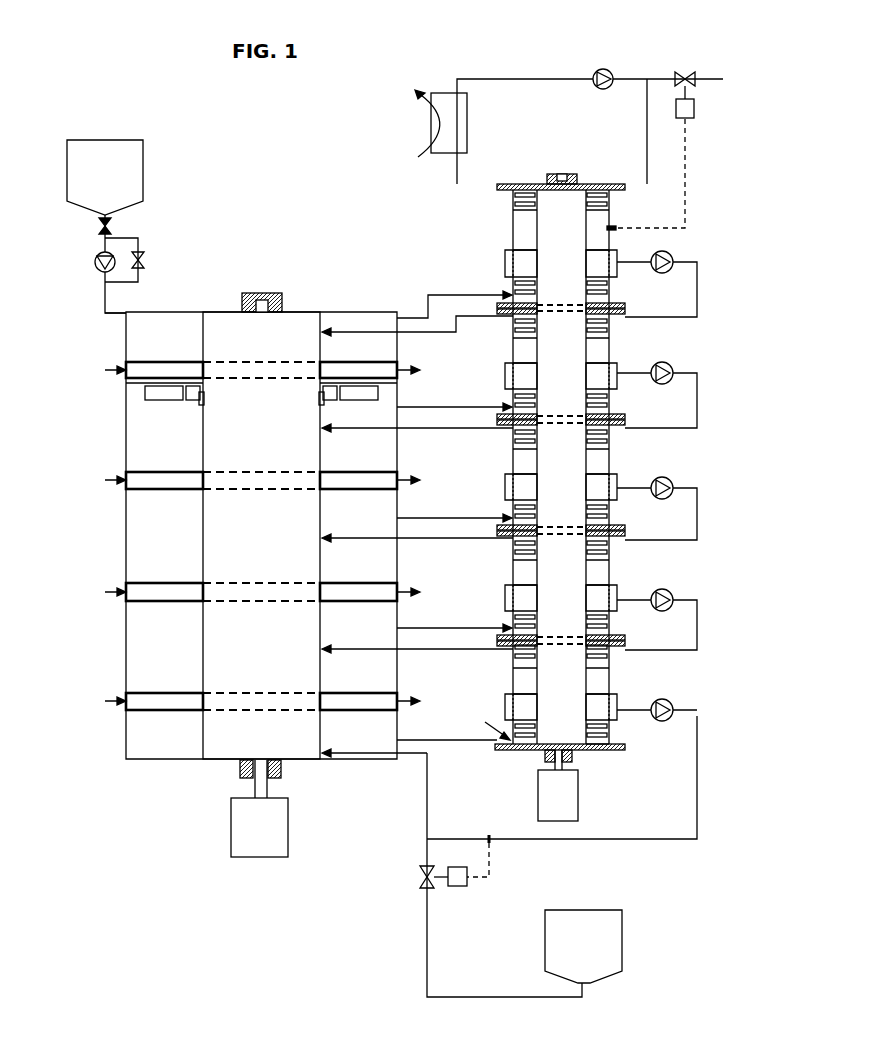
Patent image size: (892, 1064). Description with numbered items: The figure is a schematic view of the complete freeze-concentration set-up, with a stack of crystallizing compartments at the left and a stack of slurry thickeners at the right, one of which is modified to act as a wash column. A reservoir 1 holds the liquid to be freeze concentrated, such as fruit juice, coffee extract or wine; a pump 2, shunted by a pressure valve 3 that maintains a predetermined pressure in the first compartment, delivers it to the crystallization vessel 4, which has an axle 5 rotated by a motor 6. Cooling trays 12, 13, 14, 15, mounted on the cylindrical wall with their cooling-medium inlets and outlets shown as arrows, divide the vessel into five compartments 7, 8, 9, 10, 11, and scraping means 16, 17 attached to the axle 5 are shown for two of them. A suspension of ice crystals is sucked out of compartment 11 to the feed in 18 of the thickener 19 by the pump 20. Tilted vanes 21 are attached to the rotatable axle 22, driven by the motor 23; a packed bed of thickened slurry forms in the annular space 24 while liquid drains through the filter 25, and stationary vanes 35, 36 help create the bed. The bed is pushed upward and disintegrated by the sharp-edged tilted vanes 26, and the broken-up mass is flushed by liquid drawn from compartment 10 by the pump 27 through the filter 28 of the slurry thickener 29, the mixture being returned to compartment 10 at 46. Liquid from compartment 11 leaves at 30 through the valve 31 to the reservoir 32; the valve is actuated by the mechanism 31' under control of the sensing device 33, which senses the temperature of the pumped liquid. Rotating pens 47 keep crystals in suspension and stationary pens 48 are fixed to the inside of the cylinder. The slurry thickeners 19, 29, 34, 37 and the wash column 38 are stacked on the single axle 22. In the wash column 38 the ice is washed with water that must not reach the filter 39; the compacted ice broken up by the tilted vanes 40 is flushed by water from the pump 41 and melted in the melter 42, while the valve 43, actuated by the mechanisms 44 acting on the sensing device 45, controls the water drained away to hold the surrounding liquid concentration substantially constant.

The reservoir 1 is at (130, 165).
The pump 2 is at (95, 260).
The pressure valve 3 is at (143, 260).
The crystallization vessel 4 is at (126, 322).
The axle 5 is at (222, 740).
The motor 6 is at (245, 822).
The compartment 7 is at (143, 341).
The compartment 8 is at (143, 423).
The compartment 9 is at (143, 521).
The compartment 10 is at (143, 649).
The compartment 11 is at (143, 724).
The cooling tray 12 is at (168, 367).
The cooling tray 13 is at (165, 478).
The cooling tray 14 is at (165, 586).
The cooling tray 15 is at (165, 697).
The scraping means 16 is at (135, 382).
The scraping means 17 is at (385, 385).
The feed in 18 is at (482, 722).
The thickener 19 is at (617, 690).
The pump 20 is at (673, 713).
The tilted vanes 21 is at (604, 748).
The rotatable axle 22 is at (565, 452).
The motor 23 is at (568, 798).
The annular space 24 is at (600, 702).
The filter 25 is at (615, 713).
The tilted vanes 26 is at (603, 662).
The pump 27 is at (673, 596).
The filter 28 is at (617, 590).
The slurry thickener 29 is at (609, 563).
The outlet 30 is at (427, 848).
The valve 31 is at (406, 879).
The mechanism 31' is at (457, 897).
The reservoir 32 is at (610, 940).
The sensing device 33 is at (489, 836).
The slurry thickener 34 is at (609, 467).
The stationary vanes 35 is at (607, 733).
The stationary vanes 36 is at (598, 680).
The slurry thickener 37 is at (609, 348).
The wash column 38 is at (513, 236).
The filter 39 is at (617, 272).
The tilted vanes 40 is at (609, 205).
The pump 41 is at (613, 70).
The melter 42 is at (431, 125).
The valve 43 is at (685, 70).
The mechanisms 44 is at (694, 110).
The sensing device 45 is at (619, 232).
The inlet 46 is at (330, 648).
The rotating pens 47 is at (520, 185).
The stationary pens 48 is at (518, 194).